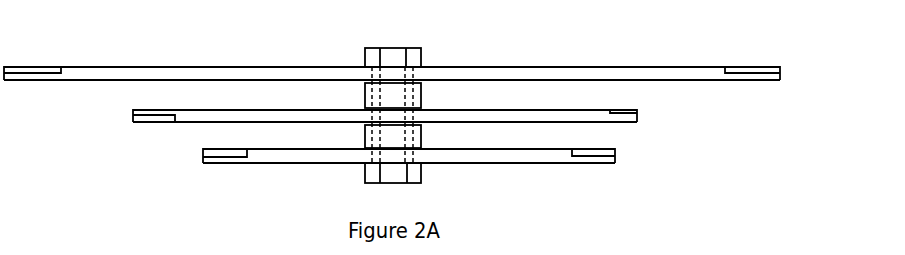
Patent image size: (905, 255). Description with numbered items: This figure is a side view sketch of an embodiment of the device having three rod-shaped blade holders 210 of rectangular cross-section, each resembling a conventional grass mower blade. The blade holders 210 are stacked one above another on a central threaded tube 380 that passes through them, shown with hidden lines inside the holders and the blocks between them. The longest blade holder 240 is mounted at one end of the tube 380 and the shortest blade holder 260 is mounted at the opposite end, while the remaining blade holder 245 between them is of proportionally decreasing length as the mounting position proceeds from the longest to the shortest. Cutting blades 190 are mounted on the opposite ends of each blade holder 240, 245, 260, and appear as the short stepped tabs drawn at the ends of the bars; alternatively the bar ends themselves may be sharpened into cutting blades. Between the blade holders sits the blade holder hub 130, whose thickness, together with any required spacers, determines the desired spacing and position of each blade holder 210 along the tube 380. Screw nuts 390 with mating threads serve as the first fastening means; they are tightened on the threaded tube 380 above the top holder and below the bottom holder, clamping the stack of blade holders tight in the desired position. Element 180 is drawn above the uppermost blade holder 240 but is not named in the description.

The blade holder 210 is at (520, 80).
The longest blade holder 240 is at (345, 66).
The remaining blade holder 245 is at (133, 111).
The shortest blade holder 260 is at (360, 163).
The cutting blade 190 is at (203, 153).
The upper clamp block 180 is at (421, 58).
The blade holder hub 130 is at (421, 94).
The threaded tube 380 is at (412, 141).
The screw nut 390 is at (421, 177).